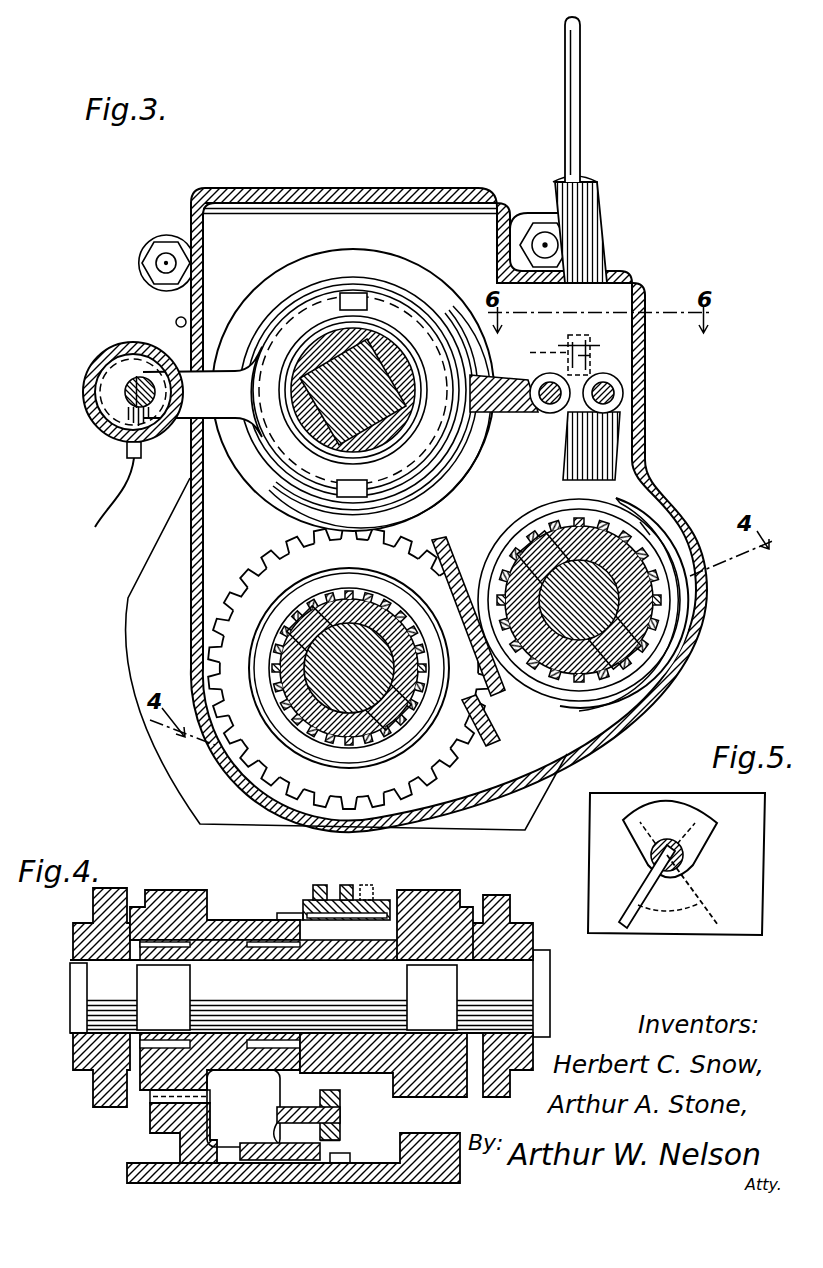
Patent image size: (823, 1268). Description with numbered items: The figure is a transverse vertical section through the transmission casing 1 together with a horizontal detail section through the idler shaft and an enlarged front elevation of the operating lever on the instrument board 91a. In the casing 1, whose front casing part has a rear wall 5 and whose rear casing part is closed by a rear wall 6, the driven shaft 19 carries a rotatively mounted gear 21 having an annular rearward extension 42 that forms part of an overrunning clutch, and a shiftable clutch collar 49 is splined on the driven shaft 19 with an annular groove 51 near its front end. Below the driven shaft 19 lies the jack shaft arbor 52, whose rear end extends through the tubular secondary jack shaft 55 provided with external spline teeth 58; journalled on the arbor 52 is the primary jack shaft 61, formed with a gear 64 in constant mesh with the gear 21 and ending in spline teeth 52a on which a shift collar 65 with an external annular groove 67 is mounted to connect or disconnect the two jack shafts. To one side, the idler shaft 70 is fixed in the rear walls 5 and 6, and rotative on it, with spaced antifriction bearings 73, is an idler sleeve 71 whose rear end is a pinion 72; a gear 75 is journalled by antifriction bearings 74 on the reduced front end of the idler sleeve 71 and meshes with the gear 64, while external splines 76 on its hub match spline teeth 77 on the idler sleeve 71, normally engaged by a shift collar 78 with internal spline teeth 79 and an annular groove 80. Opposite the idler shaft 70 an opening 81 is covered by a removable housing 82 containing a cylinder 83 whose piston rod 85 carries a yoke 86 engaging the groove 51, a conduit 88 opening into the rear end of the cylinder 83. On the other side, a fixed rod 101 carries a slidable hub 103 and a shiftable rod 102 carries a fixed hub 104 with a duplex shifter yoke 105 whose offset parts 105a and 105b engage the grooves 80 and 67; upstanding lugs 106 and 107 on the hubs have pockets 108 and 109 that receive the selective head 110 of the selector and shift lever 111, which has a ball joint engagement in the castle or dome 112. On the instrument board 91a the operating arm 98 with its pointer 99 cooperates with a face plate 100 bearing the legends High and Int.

In FIG. 3, the casing 1 is at (99, 658).
In FIG. 4, the rear wall 5 is at (93, 907).
In FIG. 4, the rear wall 6 is at (511, 906).
In FIG. 3, the driven shaft 19 is at (353, 390).
In FIG. 3, the gear 21 is at (395, 277).
In FIG. 3, the annular rearward extension 42 is at (325, 254).
In FIG. 3, the shiftable clutch collar 49 is at (272, 288).
In FIG. 3, the annular groove 51 is at (362, 293).
In FIG. 3, the jack shaft arbor 52 is at (349, 668).
In FIG. 3, the external spline teeth 52a is at (387, 610).
In FIG. 4, the secondary jack shaft 55 is at (458, 1164).
In FIG. 4, the external spline teeth 58 is at (352, 1158).
In FIG. 3, the primary jack shaft 61 is at (288, 608).
In FIG. 3, the gear 64 is at (288, 548).
In FIG. 4, the gear 64 is at (150, 1125).
In FIG. 3, the shift collar 65 is at (330, 776).
In FIG. 4, the shift collar 65 is at (339, 1145).
In FIG. 4, the external annular groove 67 is at (277, 1130).
In FIG. 3, the idler shaft 70 is at (606, 600).
In FIG. 4, the idler shaft 70 is at (301, 996).
In FIG. 3, the idler sleeve 71 is at (565, 668).
In FIG. 4, the idler sleeve 71 is at (333, 955).
In FIG. 4, the pinion 72 is at (460, 905).
In FIG. 4, the antifriction bearings 73 is at (478, 993).
In FIG. 4, the antifriction bearings 74 is at (290, 953).
In FIG. 4, the gear 75 is at (197, 886).
In FIG. 4, the external splines 76 is at (285, 912).
In FIG. 3, the spline teeth 77 is at (668, 585).
In FIG. 4, the spline teeth 77 is at (360, 892).
In FIG. 3, the shift collar 78 is at (681, 609).
In FIG. 4, the shift collar 78 is at (318, 885).
In FIG. 3, the internal spline teeth 79 is at (658, 621).
In FIG. 4, the internal spline teeth 79 is at (300, 913).
In FIG. 3, the annular groove 80 is at (655, 540).
In FIG. 4, the annular groove 80 is at (333, 899).
In FIG. 3, the opening 81 is at (178, 323).
In FIG. 3, the removable housing 82 is at (130, 343).
In FIG. 3, the cylinder 83 is at (112, 399).
In FIG. 3, the piston rod 85 is at (130, 399).
In FIG. 3, the yoke 86 is at (202, 392).
In FIG. 3, the conduit 88 is at (126, 491).
In FIG. 5, the instrument board 91a is at (757, 857).
In FIG. 5, the operating arm 98 is at (668, 883).
In FIG. 5, the pointer 99 is at (636, 846).
In FIG. 5, the face plate 100 is at (688, 808).
In FIG. 3, the rod 101 is at (541, 410).
In FIG. 3, the rod 102 is at (624, 393).
In FIG. 3, the hub 103 is at (551, 405).
In FIG. 3, the hub 104 is at (615, 401).
In FIG. 3, the duplex shifter yoke 105 is at (561, 464).
In FIG. 4, the duplex shifter yoke 105 is at (340, 1118).
In FIG. 3, the shifter yoke part 105a is at (470, 528).
In FIG. 4, the shifter yoke part 105a is at (340, 1112).
In FIG. 3, the shifter yoke part 105b is at (472, 742).
In FIG. 4, the shifter yoke part 105b is at (235, 1125).
In FIG. 3, the upstanding lug 106 is at (550, 341).
In FIG. 3, the upstanding lug 107 is at (592, 342).
In FIG. 3, the pocket 108 is at (532, 351).
In FIG. 3, the pocket 109 is at (592, 366).
In FIG. 3, the selective head 110 is at (578, 333).
In FIG. 3, the selector and shift lever 111 is at (581, 111).
In FIG. 3, the castle or dome 112 is at (597, 222).